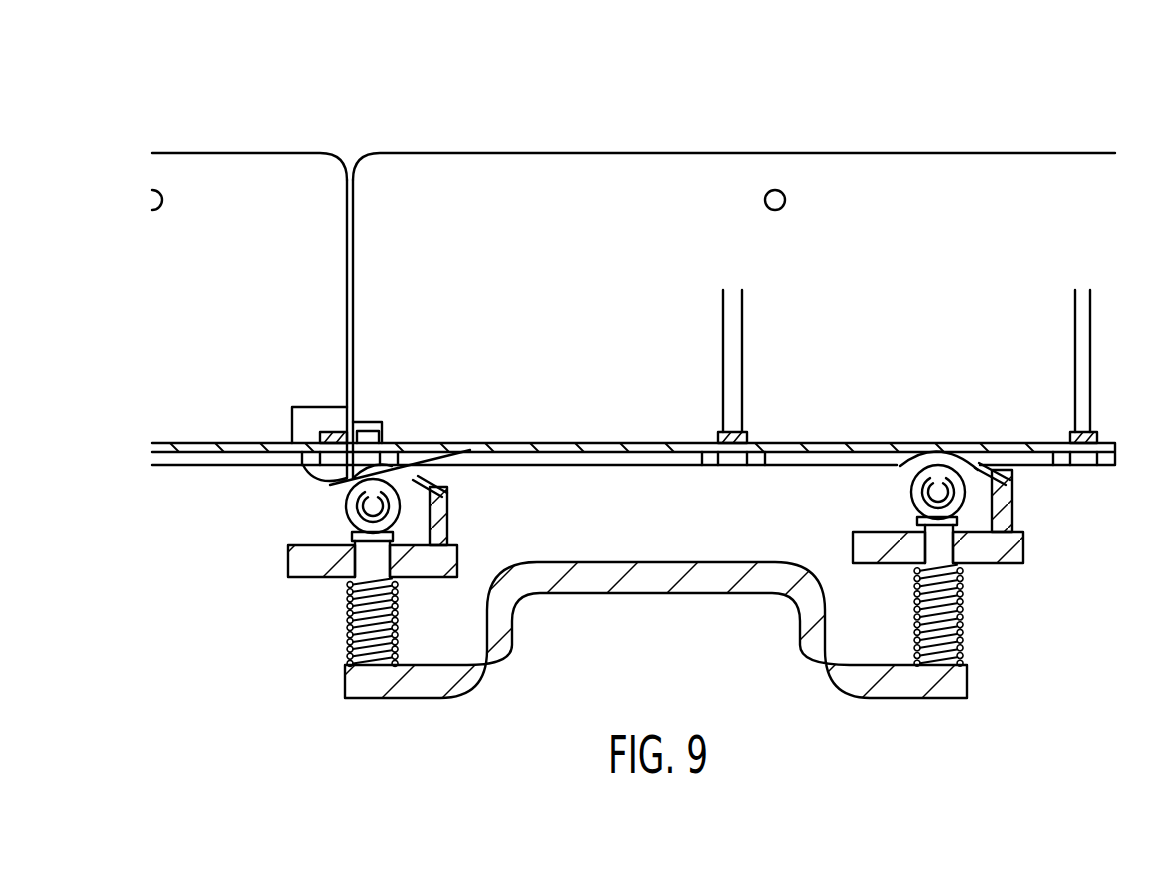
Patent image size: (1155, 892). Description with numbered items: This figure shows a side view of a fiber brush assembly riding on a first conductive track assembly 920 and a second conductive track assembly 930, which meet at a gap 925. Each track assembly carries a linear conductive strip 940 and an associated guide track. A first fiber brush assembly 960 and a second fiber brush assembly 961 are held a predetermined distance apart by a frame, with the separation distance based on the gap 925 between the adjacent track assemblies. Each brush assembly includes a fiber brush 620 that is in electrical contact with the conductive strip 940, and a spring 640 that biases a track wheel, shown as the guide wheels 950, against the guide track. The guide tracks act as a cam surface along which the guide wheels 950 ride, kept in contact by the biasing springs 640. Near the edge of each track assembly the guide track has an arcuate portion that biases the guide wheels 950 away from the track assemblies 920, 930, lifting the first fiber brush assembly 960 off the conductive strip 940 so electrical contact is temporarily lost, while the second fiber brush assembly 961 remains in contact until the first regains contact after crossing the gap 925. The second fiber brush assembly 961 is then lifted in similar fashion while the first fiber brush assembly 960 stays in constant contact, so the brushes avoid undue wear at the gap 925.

The first conductive track assembly 920 is at (243, 188).
The gap 925 is at (349, 157).
The second conductive track assembly 930 is at (966, 189).
The conductive strip 940 is at (1027, 438).
The first fiber brush assembly 960 is at (394, 440).
The second fiber brush assembly 961 is at (926, 431).
The fiber brush 620 is at (900, 455).
The guide wheels 950 is at (906, 499).
The biasing springs 640 is at (351, 639).